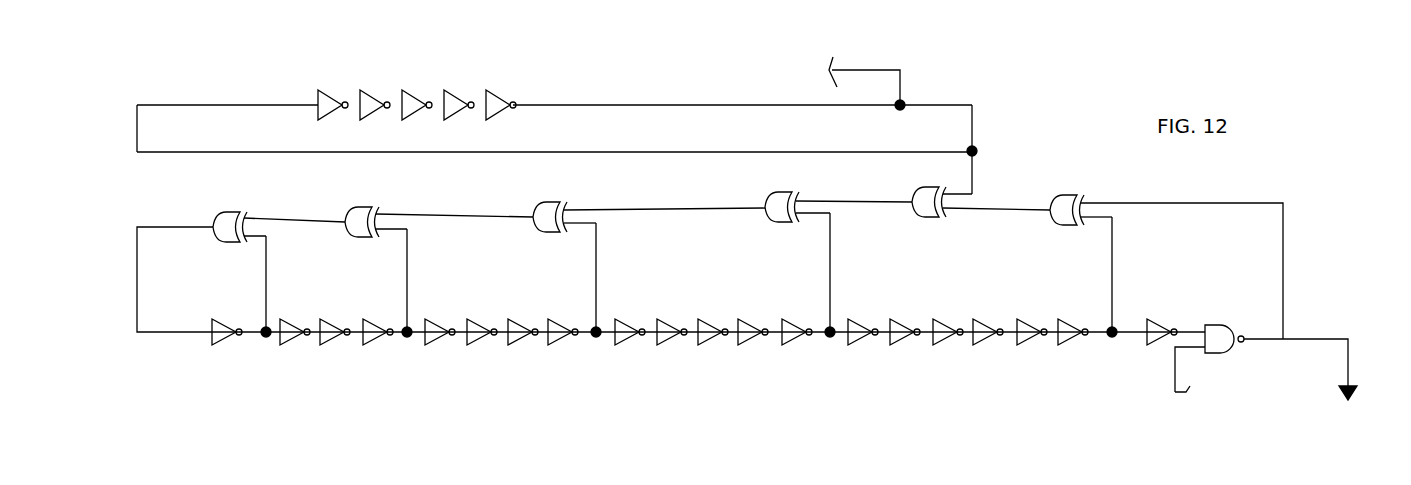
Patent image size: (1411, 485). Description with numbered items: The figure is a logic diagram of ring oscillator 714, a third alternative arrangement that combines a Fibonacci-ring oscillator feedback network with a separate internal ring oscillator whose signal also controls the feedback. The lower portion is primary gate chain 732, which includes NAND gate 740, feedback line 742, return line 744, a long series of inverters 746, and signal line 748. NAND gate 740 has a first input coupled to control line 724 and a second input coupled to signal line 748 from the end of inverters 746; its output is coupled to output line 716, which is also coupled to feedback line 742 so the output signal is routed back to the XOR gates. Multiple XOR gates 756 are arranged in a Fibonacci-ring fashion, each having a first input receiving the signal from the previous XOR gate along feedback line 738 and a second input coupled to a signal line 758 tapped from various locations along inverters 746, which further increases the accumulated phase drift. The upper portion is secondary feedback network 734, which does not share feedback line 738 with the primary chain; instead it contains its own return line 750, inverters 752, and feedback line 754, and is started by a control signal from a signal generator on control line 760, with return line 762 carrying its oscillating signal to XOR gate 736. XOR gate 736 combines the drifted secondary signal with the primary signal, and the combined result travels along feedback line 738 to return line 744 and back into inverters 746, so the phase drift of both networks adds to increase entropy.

The ring oscillator 714 is at (348, 418).
The output line 716 is at (1318, 339).
The control line 724 is at (1175, 362).
The primary gate chain 732 is at (121, 192).
The secondary feedback network 734 is at (123, 78).
The XOR gate 736 is at (930, 217).
The feedback line 738 is at (636, 210).
The NAND gate 740 is at (1215, 353).
The feedback line 742 is at (1162, 204).
The return line 744 is at (145, 332).
The inverters 746 is at (1093, 356).
The signal line 748 is at (1192, 330).
The return line 750 is at (200, 152).
The inverters 752 is at (520, 92).
The feedback line 754 is at (668, 105).
The XOR gates 756 is at (236, 212).
The signal line 758 is at (267, 257).
The control line 760 is at (900, 70).
The return line 762 is at (972, 110).